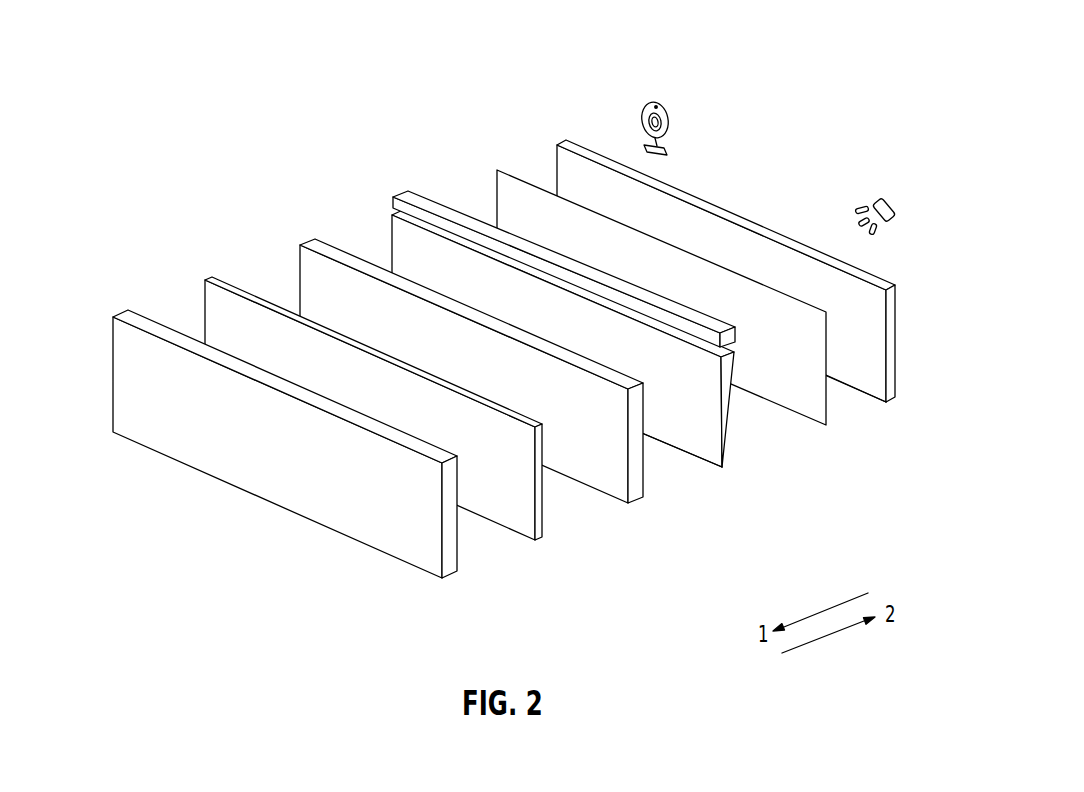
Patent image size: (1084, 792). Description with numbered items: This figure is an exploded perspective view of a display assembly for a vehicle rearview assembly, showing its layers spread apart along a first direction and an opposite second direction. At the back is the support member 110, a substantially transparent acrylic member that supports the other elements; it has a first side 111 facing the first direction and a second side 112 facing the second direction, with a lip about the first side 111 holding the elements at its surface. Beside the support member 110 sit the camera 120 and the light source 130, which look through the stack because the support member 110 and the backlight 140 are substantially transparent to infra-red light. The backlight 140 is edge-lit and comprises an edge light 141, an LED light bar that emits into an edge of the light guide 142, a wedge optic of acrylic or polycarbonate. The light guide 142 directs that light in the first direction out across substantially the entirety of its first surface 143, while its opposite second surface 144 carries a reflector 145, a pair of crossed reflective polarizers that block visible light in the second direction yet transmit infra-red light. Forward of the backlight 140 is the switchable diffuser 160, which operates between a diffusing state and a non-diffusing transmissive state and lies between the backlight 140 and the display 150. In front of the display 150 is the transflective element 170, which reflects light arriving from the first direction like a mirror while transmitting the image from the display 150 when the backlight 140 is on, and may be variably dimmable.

The support member 110 is at (723, 276).
The first side 111 is at (879, 380).
The second side 112 is at (898, 384).
The camera 120 is at (647, 108).
The light source 130 is at (876, 200).
The backlight 140 is at (586, 318).
The edge light 141 is at (733, 341).
The light guide 142 is at (727, 406).
The first surface 143 is at (710, 441).
The second surface 144 is at (730, 433).
The reflector 145 is at (632, 308).
The display 150 is at (206, 279).
The switchable diffuser 160 is at (296, 234).
The transflective element 170 is at (110, 305).